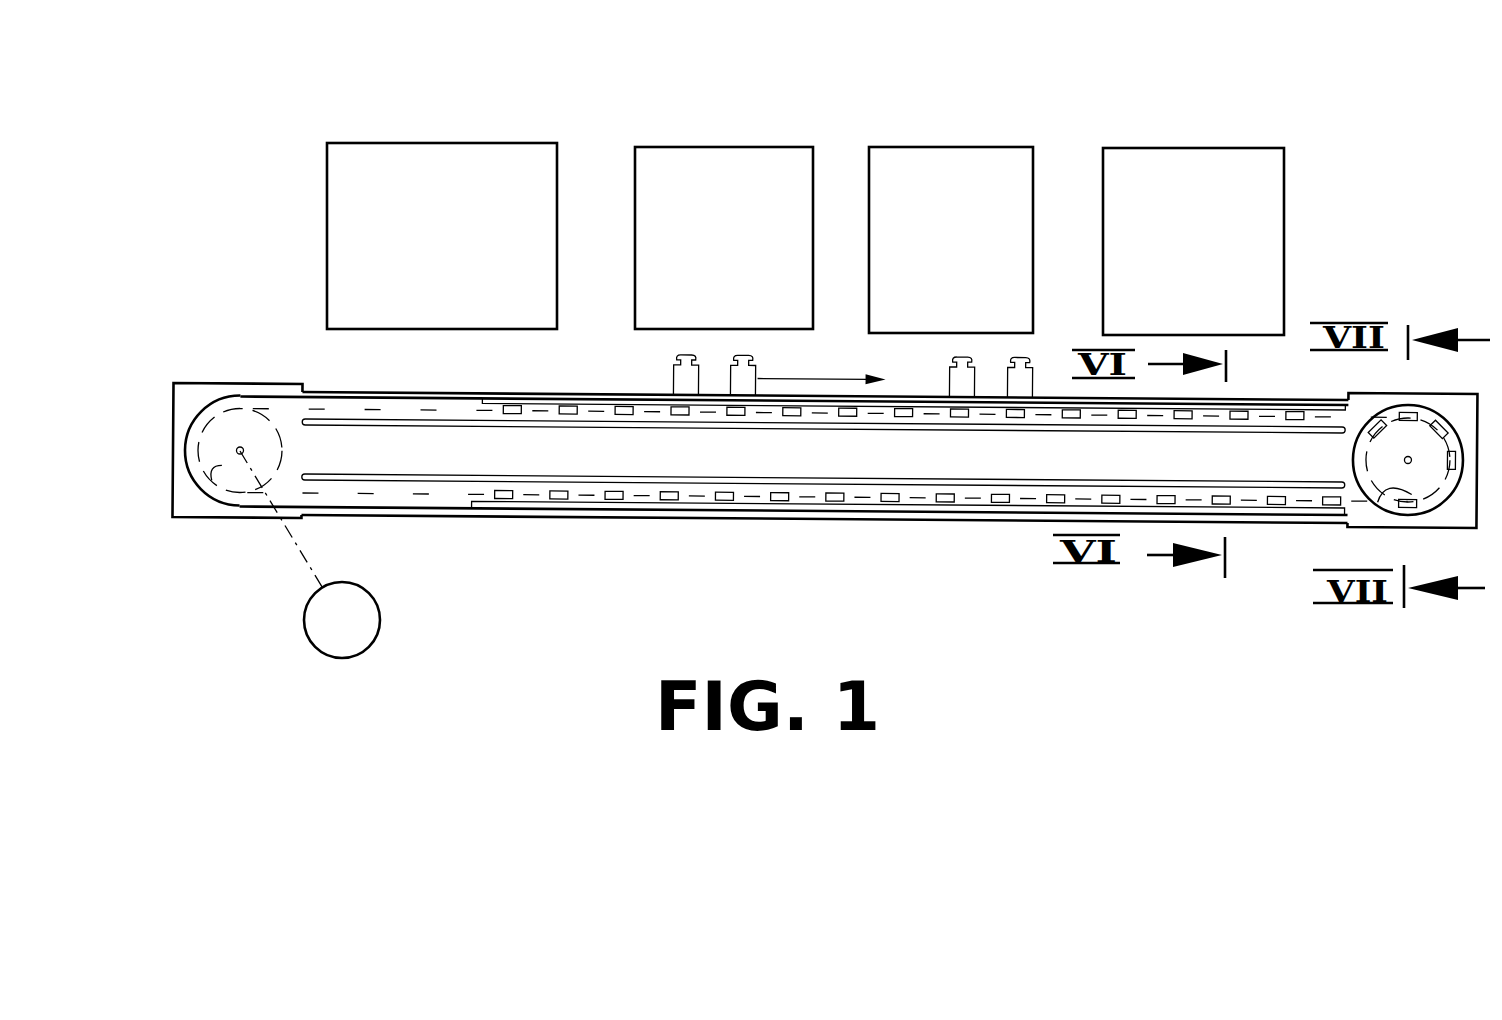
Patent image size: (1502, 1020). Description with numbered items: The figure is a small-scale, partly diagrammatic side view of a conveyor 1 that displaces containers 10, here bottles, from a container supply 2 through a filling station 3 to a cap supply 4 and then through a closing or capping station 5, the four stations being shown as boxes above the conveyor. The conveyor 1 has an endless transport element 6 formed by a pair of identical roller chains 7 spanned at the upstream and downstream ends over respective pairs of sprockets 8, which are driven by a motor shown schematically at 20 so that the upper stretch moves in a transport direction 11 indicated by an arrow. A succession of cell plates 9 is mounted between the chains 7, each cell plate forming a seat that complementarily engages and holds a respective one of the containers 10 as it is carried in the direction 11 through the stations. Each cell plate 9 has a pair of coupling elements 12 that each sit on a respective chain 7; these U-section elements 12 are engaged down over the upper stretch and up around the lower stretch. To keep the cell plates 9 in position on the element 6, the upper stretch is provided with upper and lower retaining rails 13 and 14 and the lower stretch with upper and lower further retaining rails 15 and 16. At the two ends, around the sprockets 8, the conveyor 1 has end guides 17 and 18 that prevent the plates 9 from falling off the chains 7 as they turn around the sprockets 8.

The conveyor 1 is at (817, 459).
The container supply 2 is at (404, 143).
The filling station 3 is at (662, 147).
The cap supply 4 is at (920, 150).
The closing or capping station 5 is at (1162, 150).
The endless transport element 6 is at (333, 396).
The roller chains 7 is at (285, 408).
The sprockets 8 is at (220, 480).
The cell plates 9 is at (512, 404).
The containers 10 is at (730, 357).
The transport direction 11 is at (820, 375).
The coupling elements 12 is at (668, 500).
The upper retaining rail 13 is at (1115, 413).
The lower retaining rail 14 is at (1223, 427).
The upper further retaining rail 15 is at (1310, 483).
The lower further retaining rail 16 is at (1262, 505).
The end guide 17 is at (182, 397).
The end guide 18 is at (1367, 407).
The motor 20 is at (372, 594).